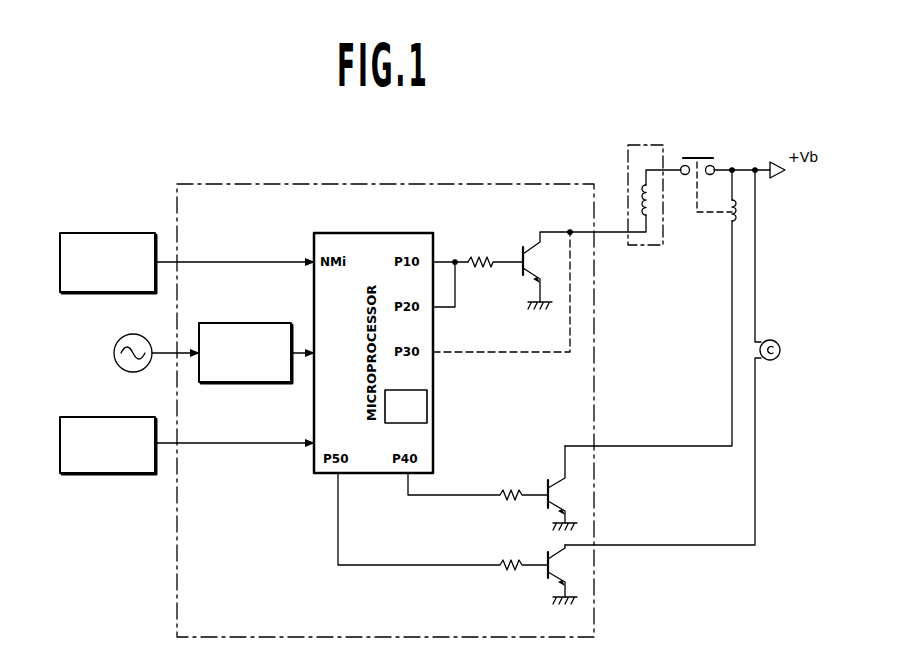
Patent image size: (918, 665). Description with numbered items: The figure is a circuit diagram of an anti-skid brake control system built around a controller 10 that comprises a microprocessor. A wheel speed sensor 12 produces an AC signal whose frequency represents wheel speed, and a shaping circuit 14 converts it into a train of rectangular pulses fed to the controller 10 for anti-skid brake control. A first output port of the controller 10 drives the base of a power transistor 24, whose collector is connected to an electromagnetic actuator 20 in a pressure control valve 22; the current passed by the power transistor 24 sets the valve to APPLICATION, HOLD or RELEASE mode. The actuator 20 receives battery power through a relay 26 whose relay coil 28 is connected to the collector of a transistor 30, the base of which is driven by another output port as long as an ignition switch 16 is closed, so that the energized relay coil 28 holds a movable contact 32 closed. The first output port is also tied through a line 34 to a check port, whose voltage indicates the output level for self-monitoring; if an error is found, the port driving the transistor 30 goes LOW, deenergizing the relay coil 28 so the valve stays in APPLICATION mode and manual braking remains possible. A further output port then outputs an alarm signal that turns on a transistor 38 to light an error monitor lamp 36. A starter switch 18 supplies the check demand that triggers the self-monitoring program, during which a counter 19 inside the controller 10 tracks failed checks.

The controller 10 is at (392, 184).
The wheel speed sensor 12 is at (120, 342).
The shaping circuit 14 is at (278, 323).
The ignition switch 16 is at (138, 474).
The starter switch 18 is at (139, 233).
The counter 19 is at (428, 406).
The electromagnetic actuator 20 is at (650, 197).
The pressure control valve 22 is at (633, 145).
The power transistor 24 is at (535, 243).
The relay 26 is at (714, 154).
The relay coil 28 is at (742, 212).
The transistor 30 is at (560, 480).
The movable contact 32 is at (692, 156).
The line 34 is at (458, 305).
The error monitor lamp 36 is at (770, 362).
The transistor 38 is at (560, 550).